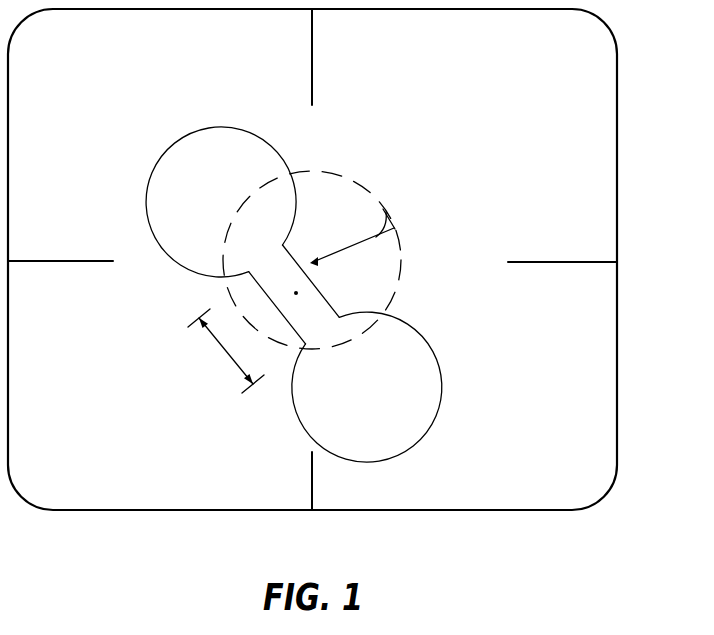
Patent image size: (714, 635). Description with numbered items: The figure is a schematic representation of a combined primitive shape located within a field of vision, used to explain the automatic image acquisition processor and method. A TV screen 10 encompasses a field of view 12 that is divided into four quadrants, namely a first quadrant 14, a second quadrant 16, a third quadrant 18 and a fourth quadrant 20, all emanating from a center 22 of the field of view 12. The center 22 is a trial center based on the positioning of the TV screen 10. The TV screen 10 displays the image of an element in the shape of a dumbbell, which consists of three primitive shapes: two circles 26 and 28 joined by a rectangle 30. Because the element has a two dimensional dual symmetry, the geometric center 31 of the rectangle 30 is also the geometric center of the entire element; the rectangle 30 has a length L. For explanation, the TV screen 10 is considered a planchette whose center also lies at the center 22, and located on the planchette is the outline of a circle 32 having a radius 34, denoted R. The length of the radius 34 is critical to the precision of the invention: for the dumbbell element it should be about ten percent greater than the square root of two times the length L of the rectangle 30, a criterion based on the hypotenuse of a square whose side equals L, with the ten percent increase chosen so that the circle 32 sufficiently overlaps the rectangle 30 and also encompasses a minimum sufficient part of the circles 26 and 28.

The TV screen 10 is at (355, 259).
The field of view 12 is at (608, 355).
The first quadrant 14 is at (500, 128).
The second quadrant 16 is at (145, 126).
The third quadrant 18 is at (120, 380).
The fourth quadrant 20 is at (514, 383).
The center 22 is at (313, 262).
The circle 26 is at (418, 442).
The circle 28 is at (207, 125).
The rectangle 30 is at (257, 281).
The geometric center of rectangle 31 is at (296, 293).
The circle outline 32 is at (362, 186).
The radius 34 is at (376, 237).